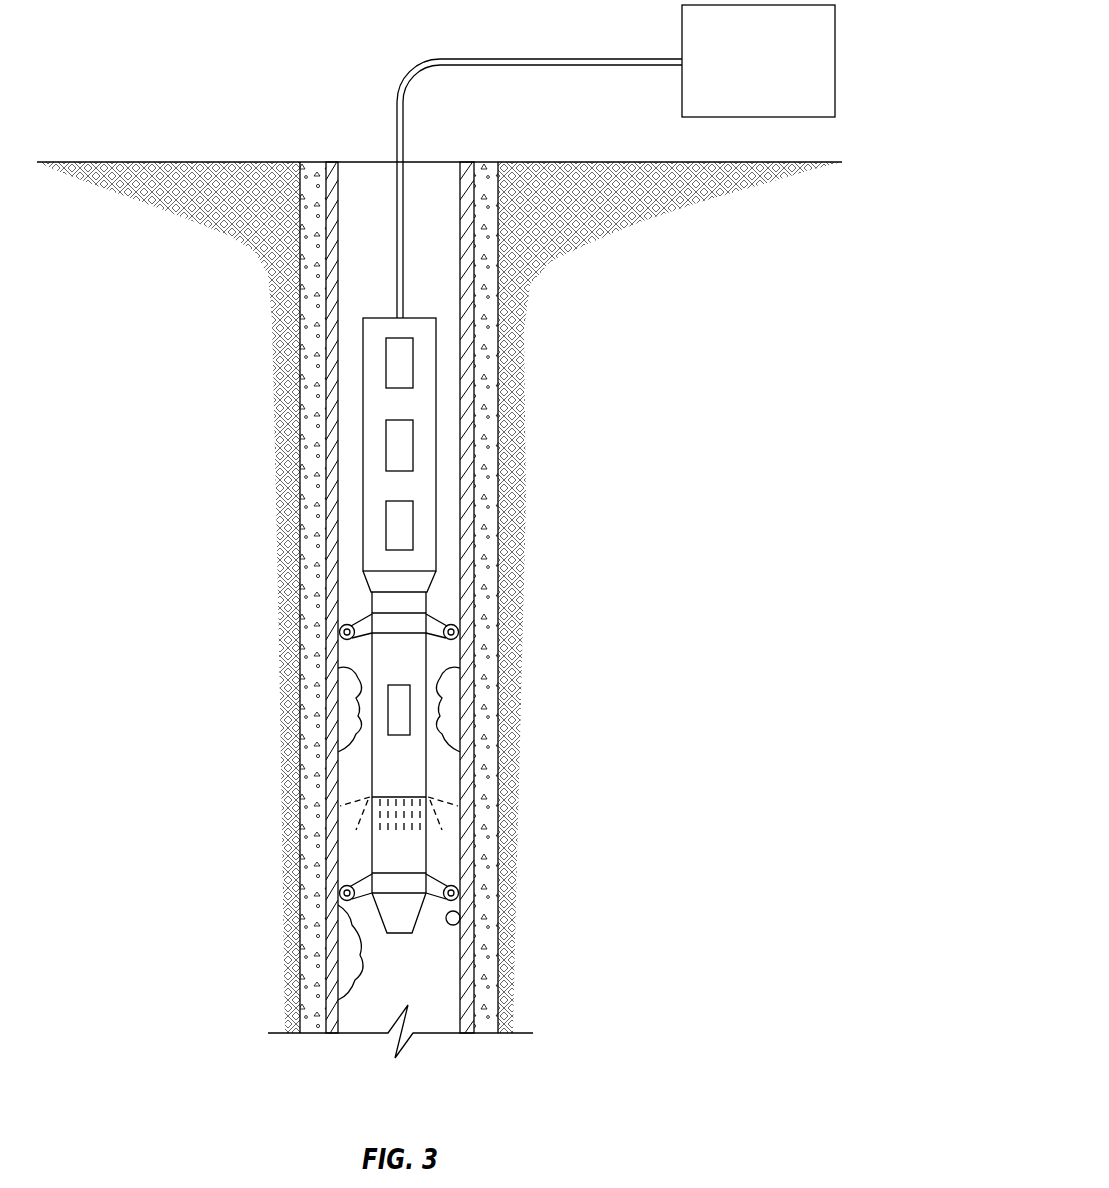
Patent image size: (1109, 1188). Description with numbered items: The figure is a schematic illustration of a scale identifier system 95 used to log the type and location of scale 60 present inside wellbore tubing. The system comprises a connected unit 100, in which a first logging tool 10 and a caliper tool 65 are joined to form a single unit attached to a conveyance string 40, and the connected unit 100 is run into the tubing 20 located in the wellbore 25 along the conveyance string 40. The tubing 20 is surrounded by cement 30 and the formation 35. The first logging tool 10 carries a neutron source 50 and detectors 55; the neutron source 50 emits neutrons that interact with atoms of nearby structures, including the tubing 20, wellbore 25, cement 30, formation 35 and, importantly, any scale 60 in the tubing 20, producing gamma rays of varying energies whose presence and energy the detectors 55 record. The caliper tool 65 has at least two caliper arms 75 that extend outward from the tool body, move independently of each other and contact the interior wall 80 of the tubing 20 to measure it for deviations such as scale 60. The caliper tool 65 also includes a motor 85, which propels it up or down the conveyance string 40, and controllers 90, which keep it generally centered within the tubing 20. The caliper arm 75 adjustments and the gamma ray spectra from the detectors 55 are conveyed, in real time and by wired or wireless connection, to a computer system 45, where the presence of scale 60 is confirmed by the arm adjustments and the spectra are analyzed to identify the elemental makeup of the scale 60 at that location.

The first logging tool 10 is at (362, 338).
The tubing 20 is at (332, 430).
The wellbore 25 is at (445, 957).
The cement 30 is at (312, 478).
The formation 35 is at (532, 204).
The conveyance string 40 is at (405, 117).
The computer system 45 is at (836, 62).
The neutron source 50 is at (411, 357).
The detectors 55 is at (411, 440).
The scale 60 is at (345, 703).
The caliper tool 65 is at (420, 765).
The caliper arms 75 is at (352, 820).
The interior wall 80 is at (455, 914).
The motor 85 is at (400, 690).
The controllers 90 is at (340, 632).
The scale identifier system 95 is at (345, 130).
The connected unit 100 is at (380, 585).